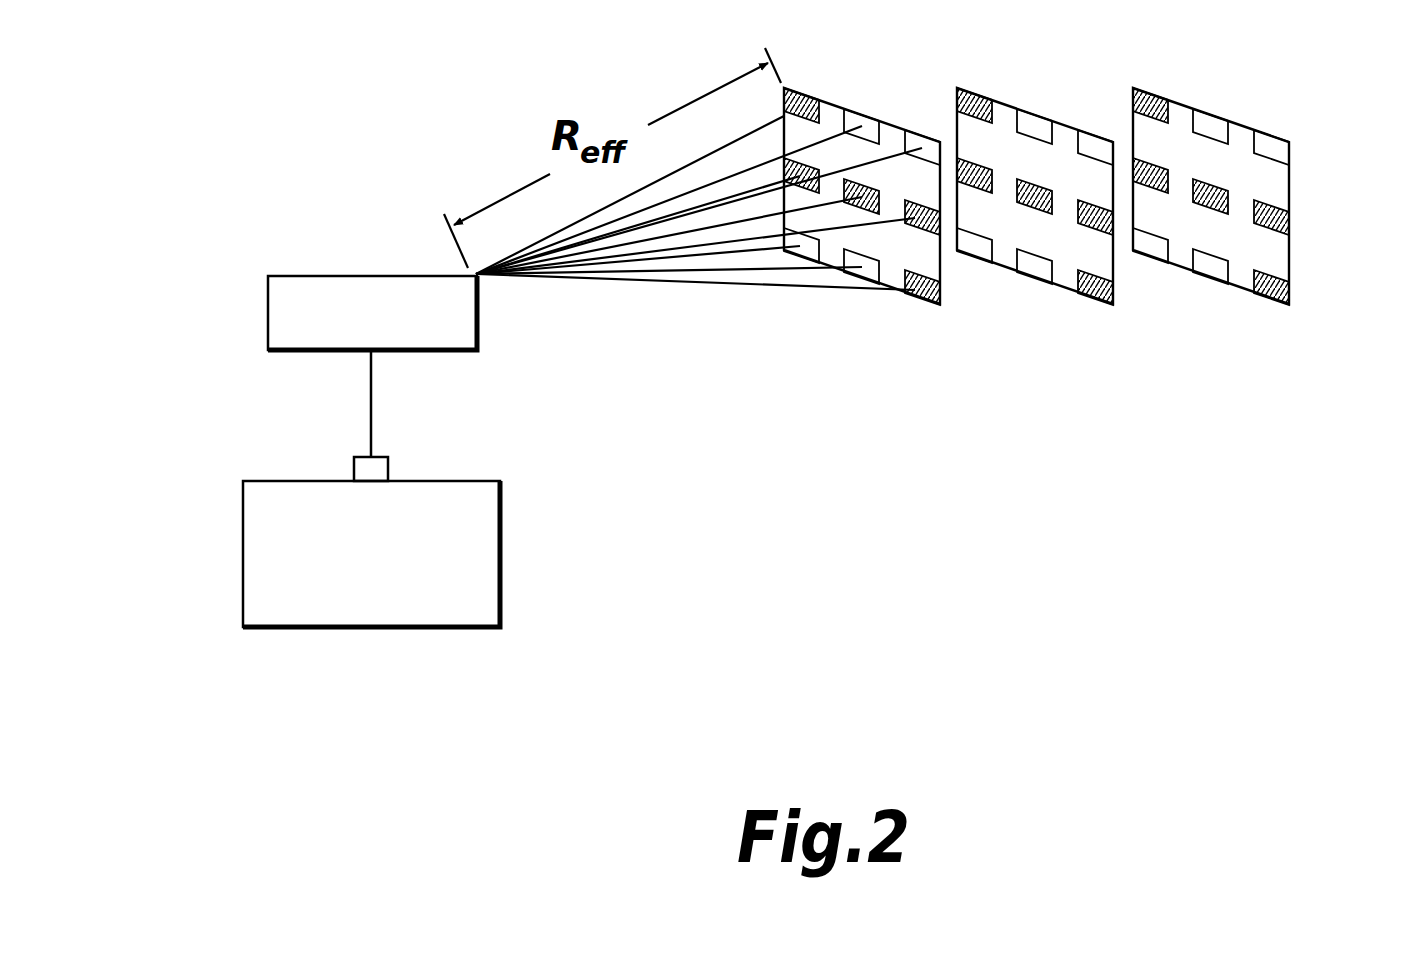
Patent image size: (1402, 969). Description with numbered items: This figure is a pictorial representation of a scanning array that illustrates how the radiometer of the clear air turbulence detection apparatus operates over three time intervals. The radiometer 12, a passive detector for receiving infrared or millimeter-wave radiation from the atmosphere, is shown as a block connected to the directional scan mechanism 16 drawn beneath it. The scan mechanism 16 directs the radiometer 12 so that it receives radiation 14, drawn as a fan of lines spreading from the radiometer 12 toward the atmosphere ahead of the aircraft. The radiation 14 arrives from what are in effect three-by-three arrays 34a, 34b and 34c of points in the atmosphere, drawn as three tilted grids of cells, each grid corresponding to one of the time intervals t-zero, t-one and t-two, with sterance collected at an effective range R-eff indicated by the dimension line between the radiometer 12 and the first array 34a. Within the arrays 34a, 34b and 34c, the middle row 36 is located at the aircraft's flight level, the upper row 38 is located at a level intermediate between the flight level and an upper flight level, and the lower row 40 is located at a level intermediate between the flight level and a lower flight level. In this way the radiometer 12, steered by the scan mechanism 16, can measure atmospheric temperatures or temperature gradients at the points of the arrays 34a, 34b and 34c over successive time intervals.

The radiometer 12 is at (283, 276).
The radiation 14 is at (658, 290).
The directional scan mechanism 16 is at (283, 481).
The array 34a is at (833, 105).
The array 34b is at (1005, 105).
The array 34c is at (1262, 204).
The middle row 36 is at (1306, 224).
The upper row 38 is at (1306, 153).
The lower row 40 is at (1306, 293).